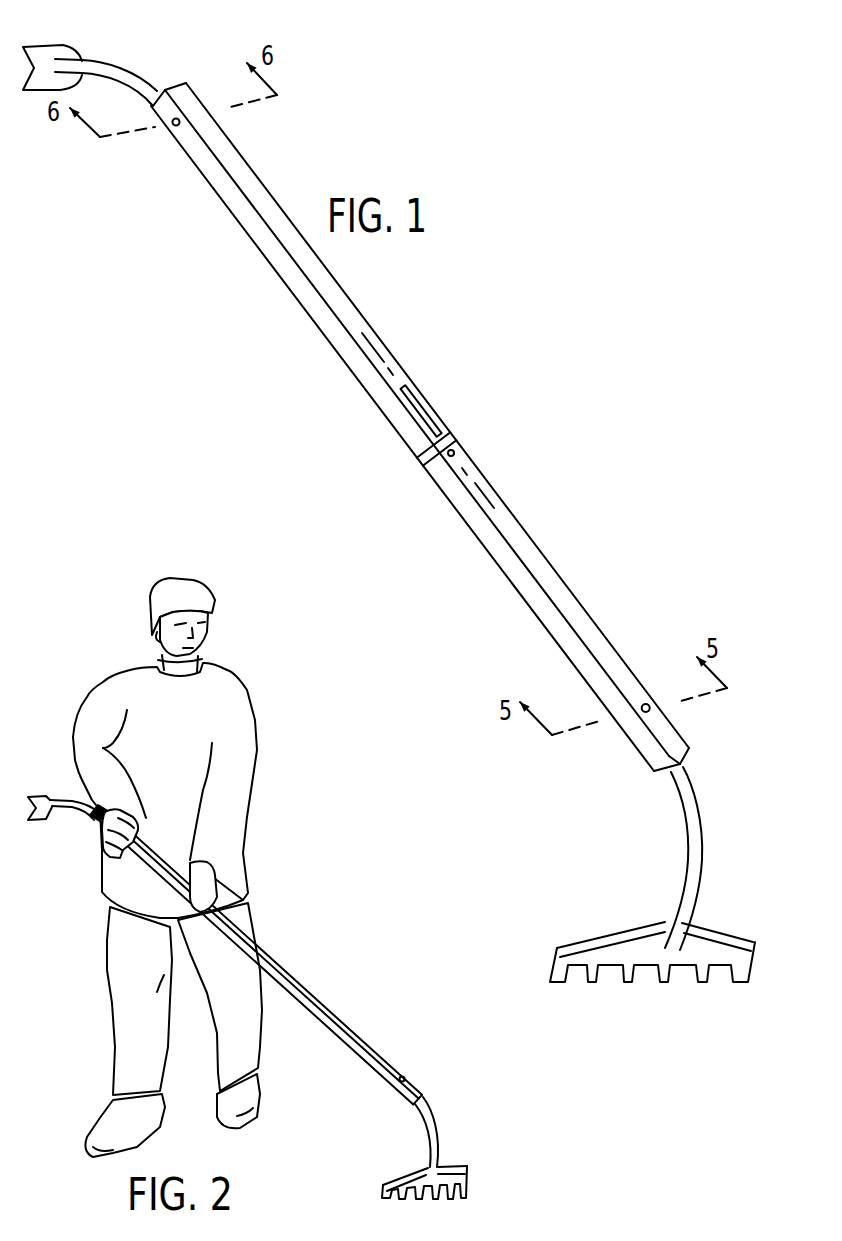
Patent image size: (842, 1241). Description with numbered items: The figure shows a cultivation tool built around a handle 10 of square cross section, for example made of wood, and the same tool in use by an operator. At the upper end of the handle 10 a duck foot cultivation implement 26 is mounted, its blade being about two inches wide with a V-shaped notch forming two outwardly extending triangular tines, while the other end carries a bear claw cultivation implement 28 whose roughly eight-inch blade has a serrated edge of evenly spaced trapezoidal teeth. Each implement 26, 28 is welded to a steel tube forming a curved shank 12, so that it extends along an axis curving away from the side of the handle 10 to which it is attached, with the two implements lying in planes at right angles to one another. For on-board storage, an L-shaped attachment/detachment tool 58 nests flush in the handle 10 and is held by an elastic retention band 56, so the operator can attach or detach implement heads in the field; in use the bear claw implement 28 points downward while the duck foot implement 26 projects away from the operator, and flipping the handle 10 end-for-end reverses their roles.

In FIG. 1, the handle 10 is at (295, 290).
In FIG. 2, the handle 10 is at (325, 1005).
In FIG. 1, the curved shank 12 is at (114, 64).
In FIG. 1, the duck foot cultivation implement 26 is at (168, 73).
In FIG. 2, the duck foot cultivation implement 26 is at (62, 820).
In FIG. 1, the bear claw cultivation implement 28 is at (712, 894).
In FIG. 2, the bear claw cultivation implement 28 is at (456, 1130).
In FIG. 1, the elastic retention band 56 is at (447, 437).
In FIG. 1, the attachment/detachment tool 58 is at (418, 395).